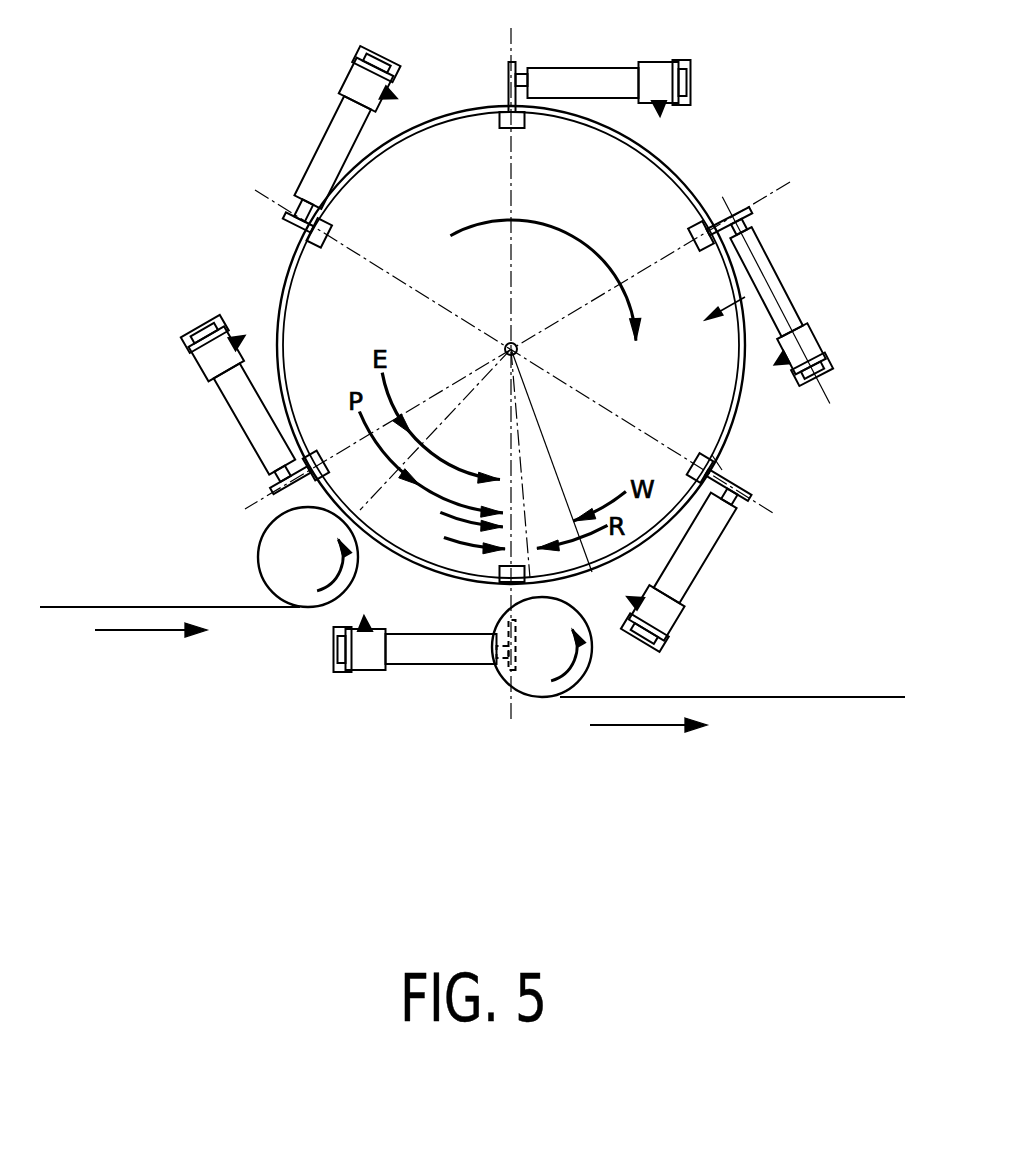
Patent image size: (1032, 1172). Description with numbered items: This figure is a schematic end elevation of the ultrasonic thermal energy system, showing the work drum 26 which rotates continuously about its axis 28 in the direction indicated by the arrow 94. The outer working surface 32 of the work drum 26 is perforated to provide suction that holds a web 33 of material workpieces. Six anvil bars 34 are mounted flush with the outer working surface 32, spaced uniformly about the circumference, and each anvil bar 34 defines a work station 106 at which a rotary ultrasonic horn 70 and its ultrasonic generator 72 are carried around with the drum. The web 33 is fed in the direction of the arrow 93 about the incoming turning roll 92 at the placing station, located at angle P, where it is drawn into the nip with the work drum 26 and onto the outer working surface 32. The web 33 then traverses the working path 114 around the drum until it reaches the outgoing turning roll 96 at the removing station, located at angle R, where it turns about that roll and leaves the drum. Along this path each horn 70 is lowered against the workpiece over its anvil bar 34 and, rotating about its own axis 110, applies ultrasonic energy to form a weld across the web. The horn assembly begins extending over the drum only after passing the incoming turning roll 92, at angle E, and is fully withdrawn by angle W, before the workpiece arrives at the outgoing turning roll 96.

The work drum 26 is at (778, 292).
The axis 28 is at (507, 344).
The outer working surface 32 is at (672, 178).
The web 33 is at (700, 198).
The anvil bars 34 is at (712, 455).
The rotary ultrasonic horn 70 is at (510, 100).
The ultrasonic generator 72 is at (660, 62).
The incoming turning roll 92 is at (259, 551).
The arrow 93 is at (130, 640).
The arrow 94 is at (572, 232).
The outgoing turning roll 96 is at (592, 668).
The work stations 106 is at (505, 108).
The axis 110 is at (822, 397).
The working path 114 is at (655, 153).